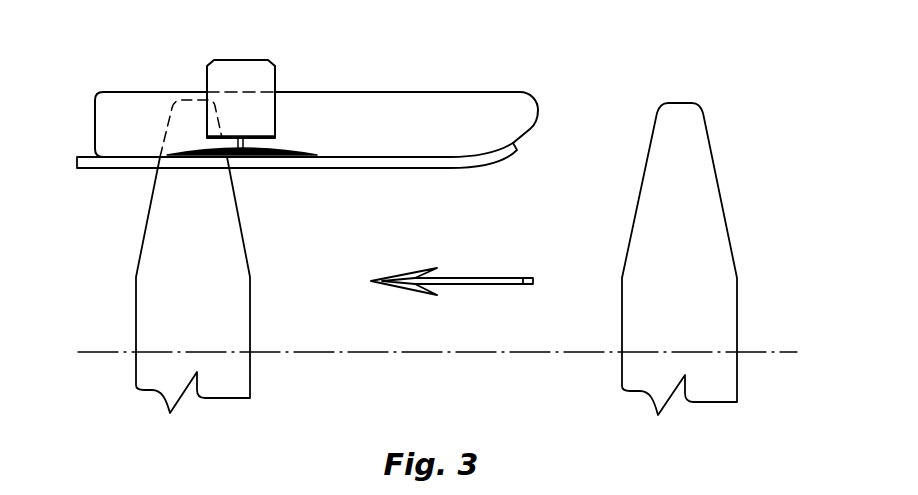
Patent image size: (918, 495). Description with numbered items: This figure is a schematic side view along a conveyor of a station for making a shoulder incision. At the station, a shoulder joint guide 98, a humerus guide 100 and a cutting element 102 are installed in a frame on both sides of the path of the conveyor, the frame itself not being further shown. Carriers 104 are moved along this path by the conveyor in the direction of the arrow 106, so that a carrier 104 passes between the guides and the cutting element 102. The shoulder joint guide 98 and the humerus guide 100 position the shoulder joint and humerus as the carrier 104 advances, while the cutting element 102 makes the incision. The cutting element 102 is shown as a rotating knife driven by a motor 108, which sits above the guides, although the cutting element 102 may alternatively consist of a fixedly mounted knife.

The shoulder joint guide 98 is at (457, 110).
The humerus guide 100 is at (410, 163).
The cutting element 102 is at (285, 147).
The carrier 104 is at (158, 243).
The arrow 106 is at (472, 277).
The motor 108 is at (257, 72).